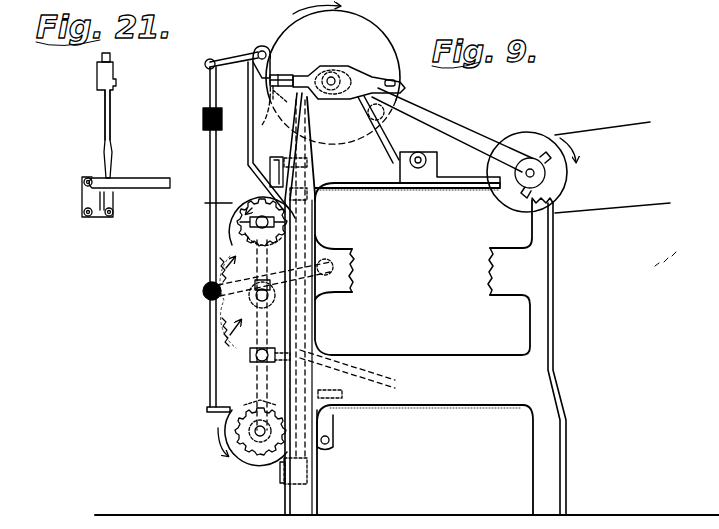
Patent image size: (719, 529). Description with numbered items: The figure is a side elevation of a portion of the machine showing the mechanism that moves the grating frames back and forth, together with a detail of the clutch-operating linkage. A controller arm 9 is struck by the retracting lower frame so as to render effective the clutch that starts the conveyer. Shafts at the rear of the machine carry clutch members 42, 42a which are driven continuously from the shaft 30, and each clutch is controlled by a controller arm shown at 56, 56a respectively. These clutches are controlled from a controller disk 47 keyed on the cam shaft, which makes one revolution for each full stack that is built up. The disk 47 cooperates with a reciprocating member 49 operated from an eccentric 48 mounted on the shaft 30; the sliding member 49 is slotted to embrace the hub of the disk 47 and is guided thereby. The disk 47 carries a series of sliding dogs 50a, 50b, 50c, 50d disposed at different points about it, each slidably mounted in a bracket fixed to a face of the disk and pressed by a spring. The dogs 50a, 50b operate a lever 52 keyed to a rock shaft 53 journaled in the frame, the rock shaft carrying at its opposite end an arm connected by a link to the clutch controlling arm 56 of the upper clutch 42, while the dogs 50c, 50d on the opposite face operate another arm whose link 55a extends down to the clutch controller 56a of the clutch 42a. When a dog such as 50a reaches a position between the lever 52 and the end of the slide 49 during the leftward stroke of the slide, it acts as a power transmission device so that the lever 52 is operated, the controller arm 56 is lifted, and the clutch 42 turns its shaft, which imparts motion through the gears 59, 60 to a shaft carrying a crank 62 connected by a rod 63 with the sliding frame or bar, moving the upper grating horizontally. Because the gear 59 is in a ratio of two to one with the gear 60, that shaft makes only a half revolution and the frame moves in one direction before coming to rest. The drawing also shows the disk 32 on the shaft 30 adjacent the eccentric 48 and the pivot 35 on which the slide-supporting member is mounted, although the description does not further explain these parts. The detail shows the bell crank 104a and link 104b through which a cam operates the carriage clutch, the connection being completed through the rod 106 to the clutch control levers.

In FIG. 9, the controller arm 9 is at (340, 421).
In FIG. 9, the shaft 30 is at (538, 173).
In FIG. 9, the crank disk 32 is at (535, 132).
In FIG. 9, the pivot pin 35 is at (417, 170).
In FIG. 9, the clutch member 42 is at (250, 218).
In FIG. 9, the clutch member 42a is at (256, 452).
In FIG. 9, the controller disk 47 is at (380, 33).
In FIG. 9, the eccentric 48 is at (552, 184).
In FIG. 9, the reciprocating member 49 is at (334, 76).
In FIG. 9, the sliding dog 50a is at (283, 75).
In FIG. 9, the sliding dog 50b is at (404, 86).
In FIG. 9, the sliding dog 50c is at (267, 112).
In FIG. 9, the sliding dog 50d is at (384, 118).
In FIG. 9, the lever 52 is at (253, 63).
In FIG. 9, the rock shaft 53 is at (262, 47).
In FIG. 9, the link 55a is at (210, 360).
In FIG. 9, the clutch controlling arm 56 is at (248, 203).
In FIG. 9, the clutch controller 56a is at (225, 408).
In FIG. 9, the gear 59 is at (248, 228).
In FIG. 9, the gear 60 is at (212, 268).
In FIG. 9, the crank 62 is at (255, 300).
In FIG. 9, the rod 63 is at (330, 259).
In FIG. 21, the bell crank 104a is at (82, 192).
In FIG. 21, the link 104b is at (105, 126).
In FIG. 21, the rod 106 is at (143, 178).